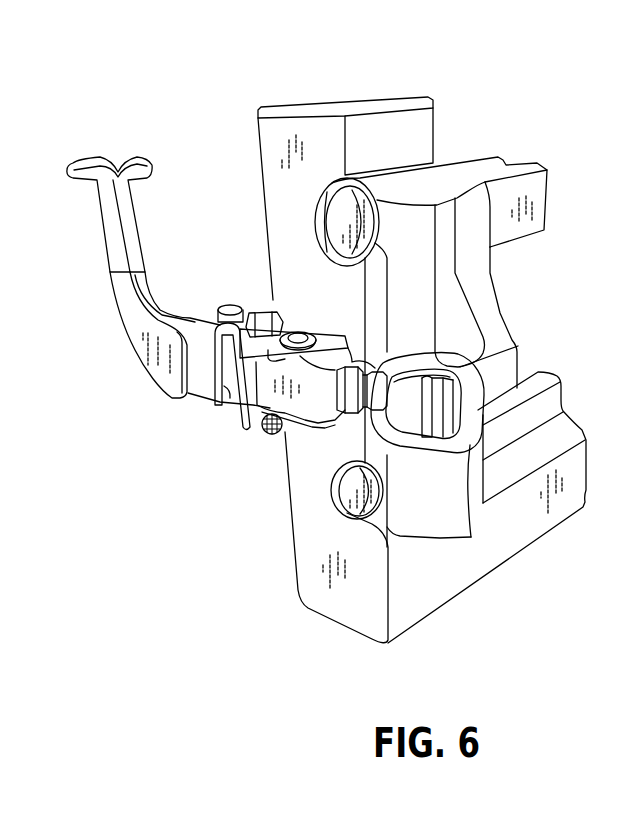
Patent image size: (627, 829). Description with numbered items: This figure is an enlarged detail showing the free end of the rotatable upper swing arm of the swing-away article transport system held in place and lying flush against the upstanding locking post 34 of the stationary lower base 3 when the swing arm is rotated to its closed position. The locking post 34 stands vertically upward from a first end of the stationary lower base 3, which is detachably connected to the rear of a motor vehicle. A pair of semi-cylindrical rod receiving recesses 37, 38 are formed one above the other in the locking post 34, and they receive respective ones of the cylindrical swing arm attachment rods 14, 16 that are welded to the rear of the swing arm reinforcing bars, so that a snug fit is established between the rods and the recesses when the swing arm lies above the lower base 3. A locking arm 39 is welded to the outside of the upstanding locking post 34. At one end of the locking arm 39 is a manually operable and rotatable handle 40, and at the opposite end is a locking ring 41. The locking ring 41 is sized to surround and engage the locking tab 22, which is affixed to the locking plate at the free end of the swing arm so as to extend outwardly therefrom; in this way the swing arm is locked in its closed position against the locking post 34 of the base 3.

The stationary lower base 3 is at (553, 538).
The cylindrical swing arm attachment rod 14 is at (335, 213).
The cylindrical swing arm attachment rod 16 is at (352, 496).
The locking tab 22 is at (468, 458).
The locking post 34 is at (317, 133).
The semi-cylindrical rod receiving recess 37 is at (322, 240).
The semi-cylindrical rod receiving recess 38 is at (357, 462).
The locking arm 39 is at (172, 399).
The handle 40 is at (110, 243).
The locking ring 41 is at (433, 440).